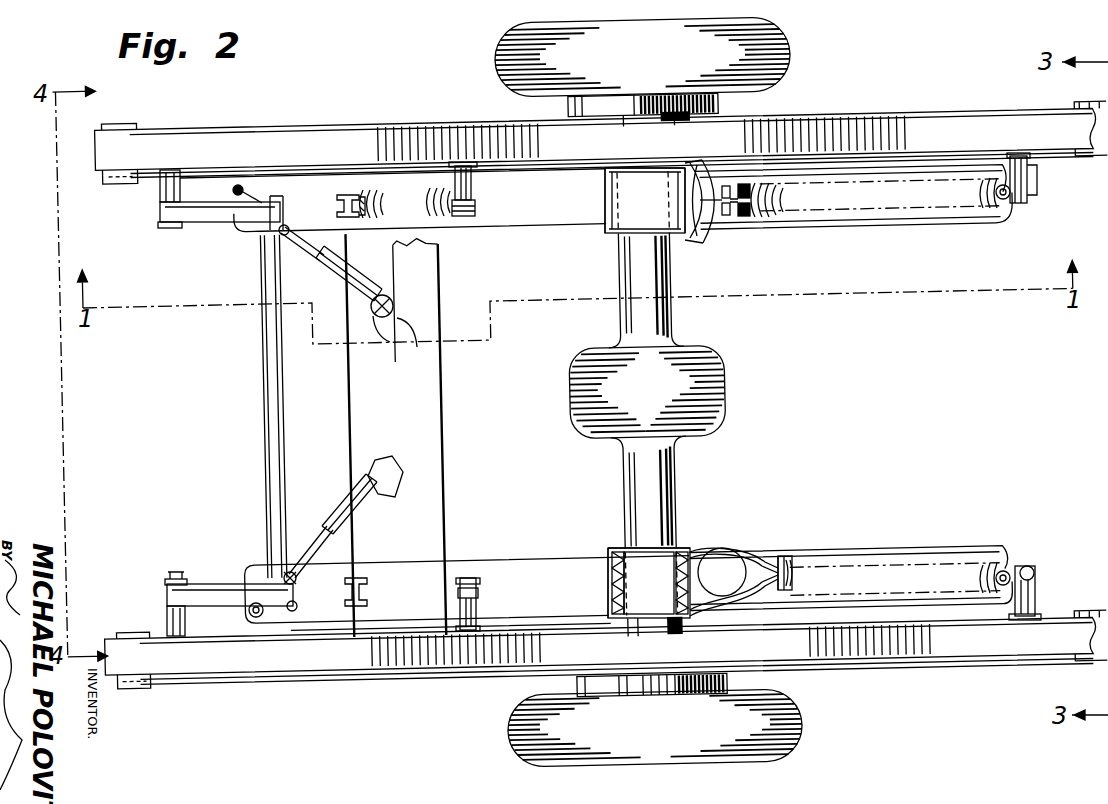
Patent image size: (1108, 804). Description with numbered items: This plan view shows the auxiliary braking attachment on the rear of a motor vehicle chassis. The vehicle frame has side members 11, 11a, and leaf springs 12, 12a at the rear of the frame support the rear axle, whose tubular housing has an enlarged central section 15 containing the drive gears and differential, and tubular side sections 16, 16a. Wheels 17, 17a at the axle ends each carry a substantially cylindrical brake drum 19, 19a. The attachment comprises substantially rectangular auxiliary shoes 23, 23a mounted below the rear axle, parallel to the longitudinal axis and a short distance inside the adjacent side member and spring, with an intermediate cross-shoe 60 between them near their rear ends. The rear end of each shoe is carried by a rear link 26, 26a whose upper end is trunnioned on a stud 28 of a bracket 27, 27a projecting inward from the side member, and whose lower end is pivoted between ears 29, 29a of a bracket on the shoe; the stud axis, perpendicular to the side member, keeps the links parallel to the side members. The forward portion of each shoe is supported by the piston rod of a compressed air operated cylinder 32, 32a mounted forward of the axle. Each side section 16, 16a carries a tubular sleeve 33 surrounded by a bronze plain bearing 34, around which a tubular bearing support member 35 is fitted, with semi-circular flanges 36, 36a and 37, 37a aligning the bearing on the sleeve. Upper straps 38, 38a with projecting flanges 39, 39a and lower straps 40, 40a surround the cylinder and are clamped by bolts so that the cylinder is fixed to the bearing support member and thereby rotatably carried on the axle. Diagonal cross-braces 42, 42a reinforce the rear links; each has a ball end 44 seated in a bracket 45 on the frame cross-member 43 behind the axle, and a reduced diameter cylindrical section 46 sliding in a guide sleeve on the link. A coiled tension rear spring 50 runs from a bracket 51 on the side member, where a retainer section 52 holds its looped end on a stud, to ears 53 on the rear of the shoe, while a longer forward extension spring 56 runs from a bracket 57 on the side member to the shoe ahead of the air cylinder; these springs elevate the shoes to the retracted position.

The frame side member 11 is at (872, 652).
The frame side member 11a is at (930, 122).
The leaf spring 12 is at (940, 668).
The leaf spring 12a is at (1028, 112).
The enlarged central section 15 is at (727, 383).
The tubular side section 16 is at (676, 478).
The tubular side section 16a is at (676, 318).
The wheel 17 is at (800, 722).
The wheel 17a is at (790, 44).
The brake drum 19 is at (730, 680).
The brake drum 19a is at (720, 100).
The auxiliary shoe 23 is at (857, 553).
The auxiliary shoe 23a is at (868, 226).
The rear link 26 is at (213, 584).
The rear link 26a is at (202, 214).
The bracket 27 is at (186, 619).
The bracket 27a is at (180, 187).
The stud 28 is at (164, 593).
The ear 29 is at (297, 608).
The ear 29a is at (297, 580).
The compressed air operated cylinder 32 is at (724, 560).
The compressed air operated cylinder 32a is at (692, 205).
The tubular sleeve 33 is at (626, 570).
The plain bearing 34 is at (609, 599).
The tubular bearing support member 35 is at (606, 194).
The flange 36 is at (615, 618).
The flange 36a is at (616, 548).
The flange 37 is at (612, 235).
The flange 37a is at (612, 168).
The upper strap 38 is at (720, 607).
The upper strap 38a is at (702, 549).
The projecting flange 39 is at (783, 592).
The projecting flange 39a is at (782, 556).
The lower strap 40 is at (697, 238).
The lower strap 40a is at (690, 162).
The cross-brace 42 is at (358, 512).
The cross-brace 42a is at (372, 272).
The frame cross-member 43 is at (442, 495).
The ball end 44 is at (372, 318).
The bracket 45 is at (408, 330).
The reduced diameter cylindrical section 46 is at (315, 545).
The coiled tension rear spring 50 is at (447, 216).
The bracket 51 is at (473, 186).
The cylindrical retainer section 52 is at (476, 211).
The ear 53 is at (338, 214).
The forward extension spring 56 is at (987, 212).
The bracket 57 is at (1030, 172).
The intermediate cross-shoe 60 is at (348, 418).